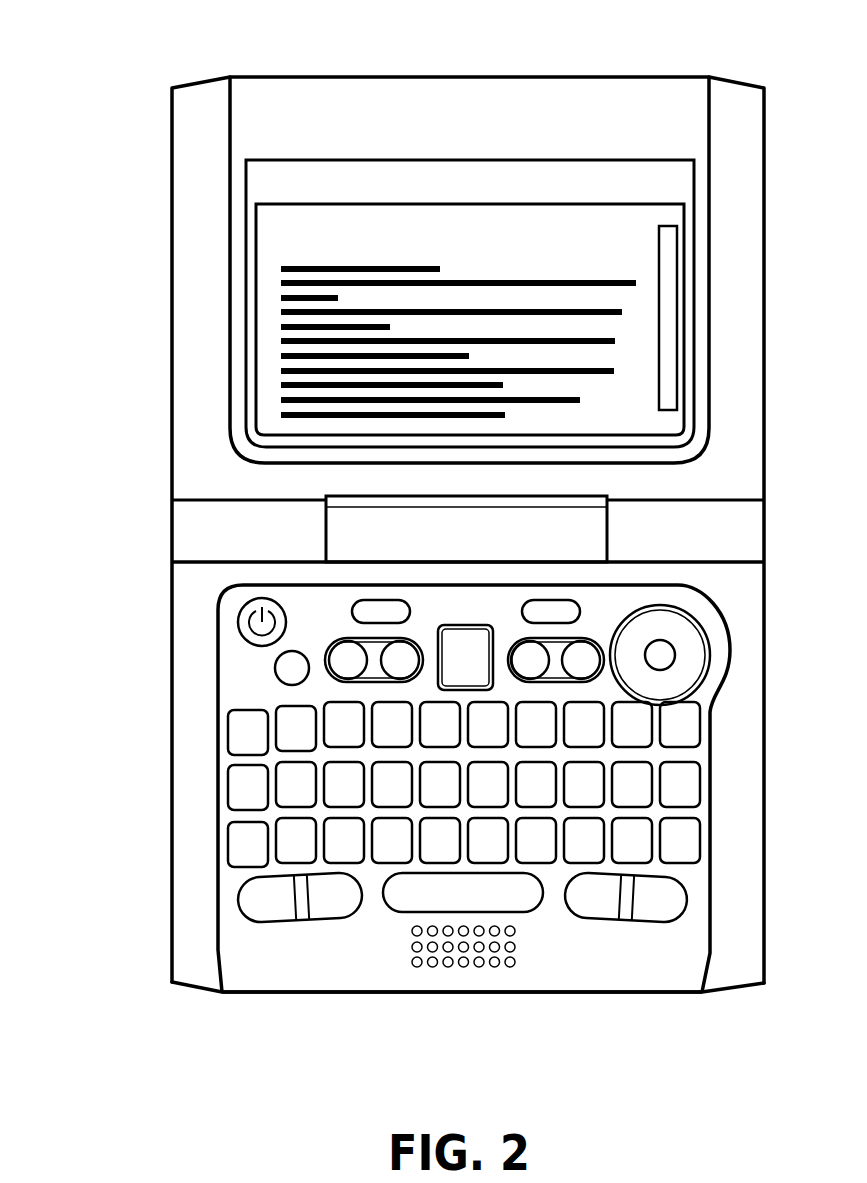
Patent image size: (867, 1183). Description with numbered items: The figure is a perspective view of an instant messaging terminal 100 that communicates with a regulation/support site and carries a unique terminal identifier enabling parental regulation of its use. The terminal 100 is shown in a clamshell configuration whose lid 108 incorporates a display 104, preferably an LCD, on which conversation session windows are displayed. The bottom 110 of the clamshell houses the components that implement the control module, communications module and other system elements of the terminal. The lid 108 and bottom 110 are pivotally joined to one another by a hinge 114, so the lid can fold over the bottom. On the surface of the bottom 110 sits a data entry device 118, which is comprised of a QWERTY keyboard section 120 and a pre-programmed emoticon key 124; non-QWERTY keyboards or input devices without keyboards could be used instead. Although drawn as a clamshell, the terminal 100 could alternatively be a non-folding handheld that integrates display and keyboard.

The terminal 100 is at (552, 60).
The display 104 is at (455, 260).
The lid 108 is at (170, 118).
The bottom 110 is at (175, 930).
The hinge 114 is at (180, 528).
The data entry device 118 is at (235, 743).
The QWERTY keyboard section 120 is at (217, 850).
The pre-programmed emoticon key 124 is at (243, 994).